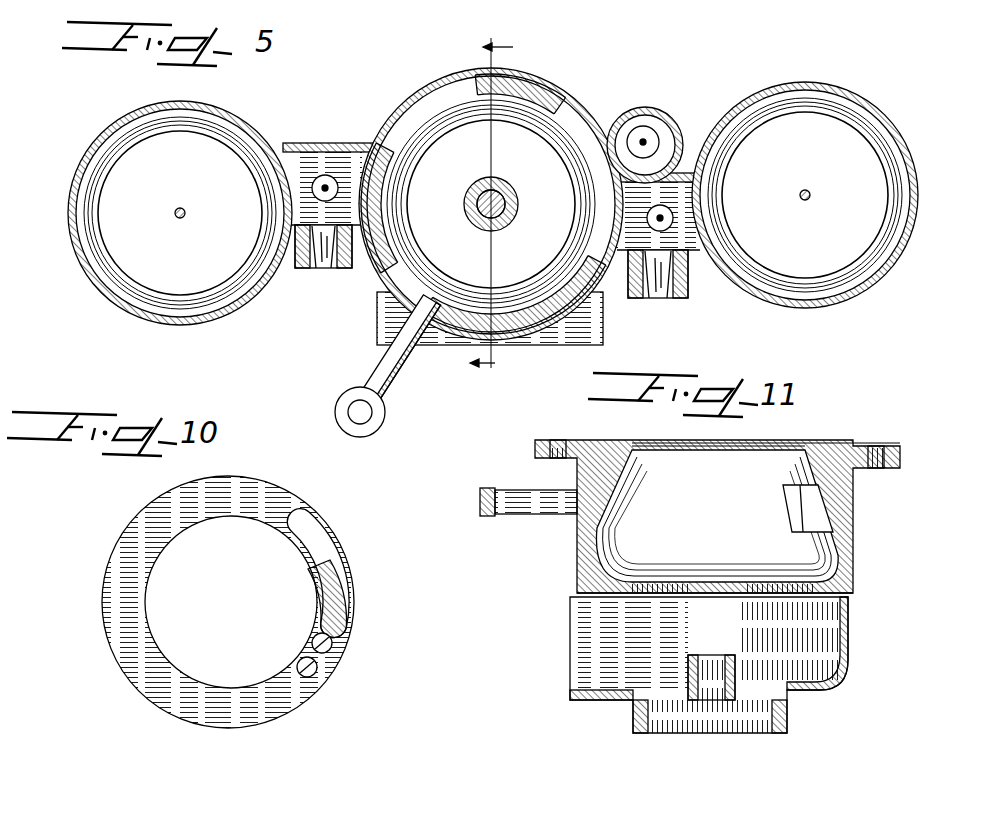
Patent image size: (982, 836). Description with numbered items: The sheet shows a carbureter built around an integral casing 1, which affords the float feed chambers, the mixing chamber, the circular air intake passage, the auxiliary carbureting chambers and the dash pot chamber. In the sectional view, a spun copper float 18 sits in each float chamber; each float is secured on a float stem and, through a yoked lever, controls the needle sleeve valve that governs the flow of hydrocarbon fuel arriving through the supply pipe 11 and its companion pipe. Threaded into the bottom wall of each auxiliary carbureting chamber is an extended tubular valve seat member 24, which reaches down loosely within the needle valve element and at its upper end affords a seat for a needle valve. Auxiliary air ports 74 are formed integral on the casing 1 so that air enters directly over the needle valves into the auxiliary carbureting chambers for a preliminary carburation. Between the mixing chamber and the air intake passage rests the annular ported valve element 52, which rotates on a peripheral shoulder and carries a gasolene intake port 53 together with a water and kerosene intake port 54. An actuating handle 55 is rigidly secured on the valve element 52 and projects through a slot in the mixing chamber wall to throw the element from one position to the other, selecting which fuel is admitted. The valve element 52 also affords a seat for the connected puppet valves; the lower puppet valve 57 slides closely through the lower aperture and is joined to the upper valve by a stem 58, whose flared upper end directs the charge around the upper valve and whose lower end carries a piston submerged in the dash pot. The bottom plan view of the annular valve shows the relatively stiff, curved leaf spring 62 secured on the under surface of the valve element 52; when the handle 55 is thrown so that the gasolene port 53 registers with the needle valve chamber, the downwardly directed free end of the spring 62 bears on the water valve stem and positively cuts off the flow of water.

In FIG. 5, the casing 1 is at (210, 313).
In FIG. 11, the casing 1 is at (853, 590).
In FIG. 5, the pipe 11 is at (512, 206).
In FIG. 5, the spun copper float 18 is at (180, 257).
In FIG. 5, the tubular valve seat member 24 is at (325, 185).
In FIG. 5, the annular ported valve element 52 is at (380, 250).
In FIG. 10, the annular ported valve element 52 is at (282, 506).
In FIG. 11, the annular ported valve element 52 is at (898, 450).
In FIG. 5, the gasolene intake port 53 is at (418, 102).
In FIG. 11, the gasolene intake port 53 is at (820, 508).
In FIG. 5, the water and kerosene intake port 54 is at (607, 162).
In FIG. 5, the actuating handle 55 is at (396, 381).
In FIG. 11, the actuating handle 55 is at (558, 502).
In FIG. 5, the puppet valve 57 is at (428, 183).
In FIG. 5, the stem 58 is at (512, 197).
In FIG. 10, the leaf spring 62 is at (330, 553).
In FIG. 5, the auxiliary air port 74 is at (308, 272).